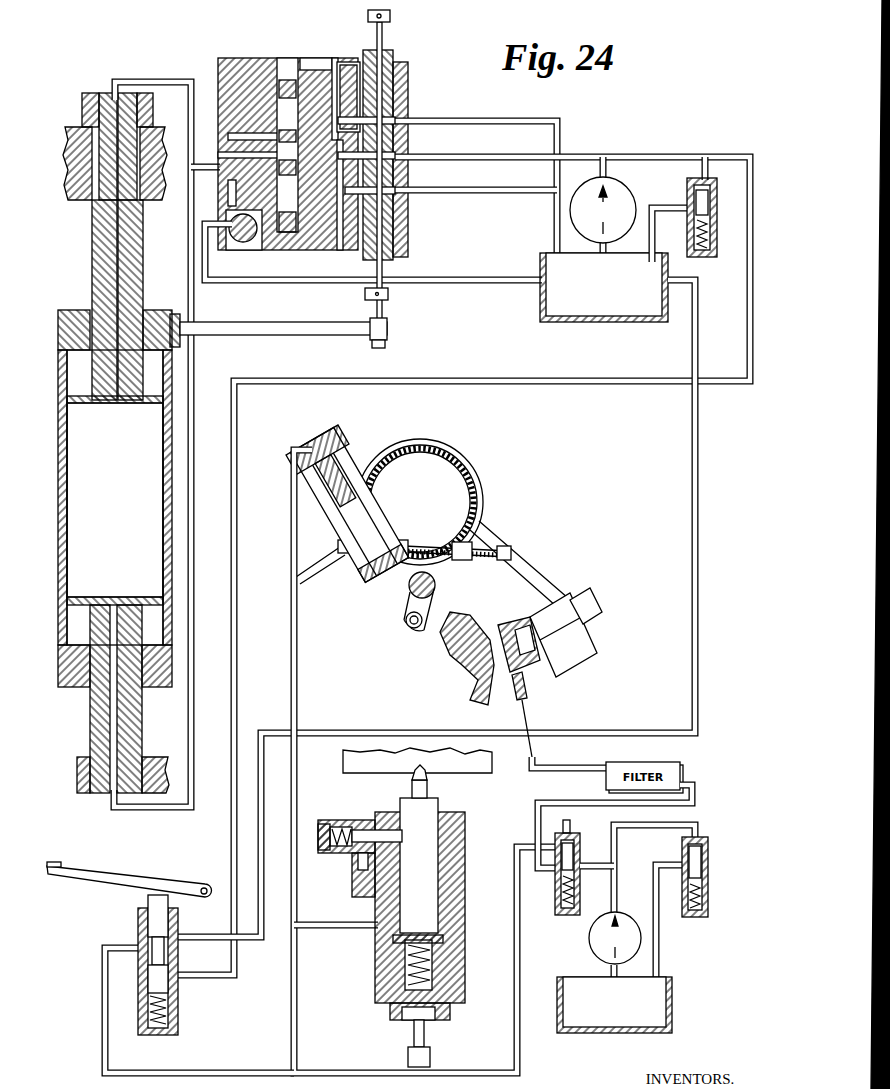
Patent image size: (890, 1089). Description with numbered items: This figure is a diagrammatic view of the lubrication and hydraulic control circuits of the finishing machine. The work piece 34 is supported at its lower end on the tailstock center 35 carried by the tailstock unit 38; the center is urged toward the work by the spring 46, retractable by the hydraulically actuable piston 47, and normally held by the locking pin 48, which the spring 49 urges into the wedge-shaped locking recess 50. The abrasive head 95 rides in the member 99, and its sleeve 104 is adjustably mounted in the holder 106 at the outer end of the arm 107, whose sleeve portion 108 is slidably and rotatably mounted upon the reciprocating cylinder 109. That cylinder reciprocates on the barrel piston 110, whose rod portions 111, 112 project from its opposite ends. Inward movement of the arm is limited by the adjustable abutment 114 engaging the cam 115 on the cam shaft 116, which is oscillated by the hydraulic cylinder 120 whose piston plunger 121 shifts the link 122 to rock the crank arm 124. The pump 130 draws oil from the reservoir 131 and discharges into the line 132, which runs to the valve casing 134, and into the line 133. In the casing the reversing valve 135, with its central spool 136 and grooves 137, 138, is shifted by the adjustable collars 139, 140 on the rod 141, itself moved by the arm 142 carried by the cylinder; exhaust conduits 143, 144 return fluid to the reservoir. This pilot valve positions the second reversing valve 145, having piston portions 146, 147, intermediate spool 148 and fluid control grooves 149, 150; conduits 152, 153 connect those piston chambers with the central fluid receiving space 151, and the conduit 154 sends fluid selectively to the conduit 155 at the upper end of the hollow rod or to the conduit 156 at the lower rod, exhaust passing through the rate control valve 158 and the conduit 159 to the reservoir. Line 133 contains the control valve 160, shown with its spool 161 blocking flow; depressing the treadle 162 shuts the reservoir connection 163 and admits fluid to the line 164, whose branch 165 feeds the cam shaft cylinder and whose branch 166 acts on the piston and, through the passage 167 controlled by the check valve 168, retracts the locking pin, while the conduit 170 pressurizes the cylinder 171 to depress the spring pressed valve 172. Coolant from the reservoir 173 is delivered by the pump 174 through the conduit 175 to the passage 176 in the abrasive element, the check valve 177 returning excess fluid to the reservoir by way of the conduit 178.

The work piece 34 is at (452, 676).
The tailstock center 35 is at (428, 790).
The tailstock unit 38 is at (466, 836).
The spring 46 is at (433, 965).
The piston 47 is at (330, 822).
The locking pin 48 is at (360, 829).
The spring 49 is at (323, 822).
The wedge-shaped locking recess 50 is at (419, 856).
The head 95 is at (528, 688).
The member 99 is at (546, 650).
The sleeve 104 is at (593, 612).
The holder 106 is at (565, 600).
The arm 107 is at (520, 560).
The sleeve portion 108 is at (482, 484).
The reciprocating cylinder 109 is at (58, 380).
The barrel piston 110 is at (75, 496).
The rod portion 111 is at (92, 264).
The rod portion 112 is at (90, 733).
The adjustable abutment 114 is at (507, 540).
The cam 115 is at (450, 606).
The cam shaft 116 is at (437, 590).
The hydraulic cylinder 120 is at (312, 430).
The piston plunger 121 is at (318, 470).
The link 122 is at (388, 590).
The crank arm 124 is at (413, 629).
The pump 130 is at (625, 192).
The reservoir 131 is at (562, 315).
The line 132 is at (603, 157).
The line 133 is at (560, 385).
The valve casing 134 is at (236, 62).
The reversing valve 135 is at (392, 54).
The central spool 136 is at (402, 155).
The groove 137 is at (402, 120).
The groove 138 is at (402, 190).
The adjustable collar 139 is at (392, 16).
The adjustable collar 140 is at (390, 294).
The rod 141 is at (386, 318).
The arm 142 is at (300, 324).
The exhaust conduit 143 is at (497, 120).
The exhaust conduit 144 is at (490, 190).
The second reversing valve 145 is at (312, 95).
The piston portion 146 is at (288, 82).
The piston portion 147 is at (288, 248).
The intermediate spool 148 is at (230, 156).
The fluid control groove 149 is at (230, 194).
The fluid control groove 150 is at (230, 136).
The central fluid receiving space 151 is at (398, 200).
The conduit 152 is at (345, 80).
The conduit 153 is at (341, 250).
The conduit 154 is at (320, 235).
The conduit 155 is at (142, 80).
The conduit 156 is at (200, 262).
The rate control valve 158 is at (243, 245).
The conduit 159 is at (688, 182).
The control valve 160 is at (138, 926).
The spool 161 is at (165, 990).
The treadle 162 is at (85, 868).
The reservoir connection 163 is at (215, 937).
The line 164 is at (104, 991).
The branch 165 is at (300, 662).
The branch 166 is at (320, 924).
The passage 167 is at (400, 903).
The check valve 168 is at (356, 868).
The conduit 170 is at (517, 925).
The cylinder 171 is at (568, 840).
The spring pressed valve 172 is at (562, 880).
The reservoir 173 is at (660, 1012).
The pump 174 is at (590, 945).
The conduit 175 is at (532, 730).
The passage 176 is at (528, 640).
The check valve 177 is at (709, 866).
The conduit 178 is at (650, 826).